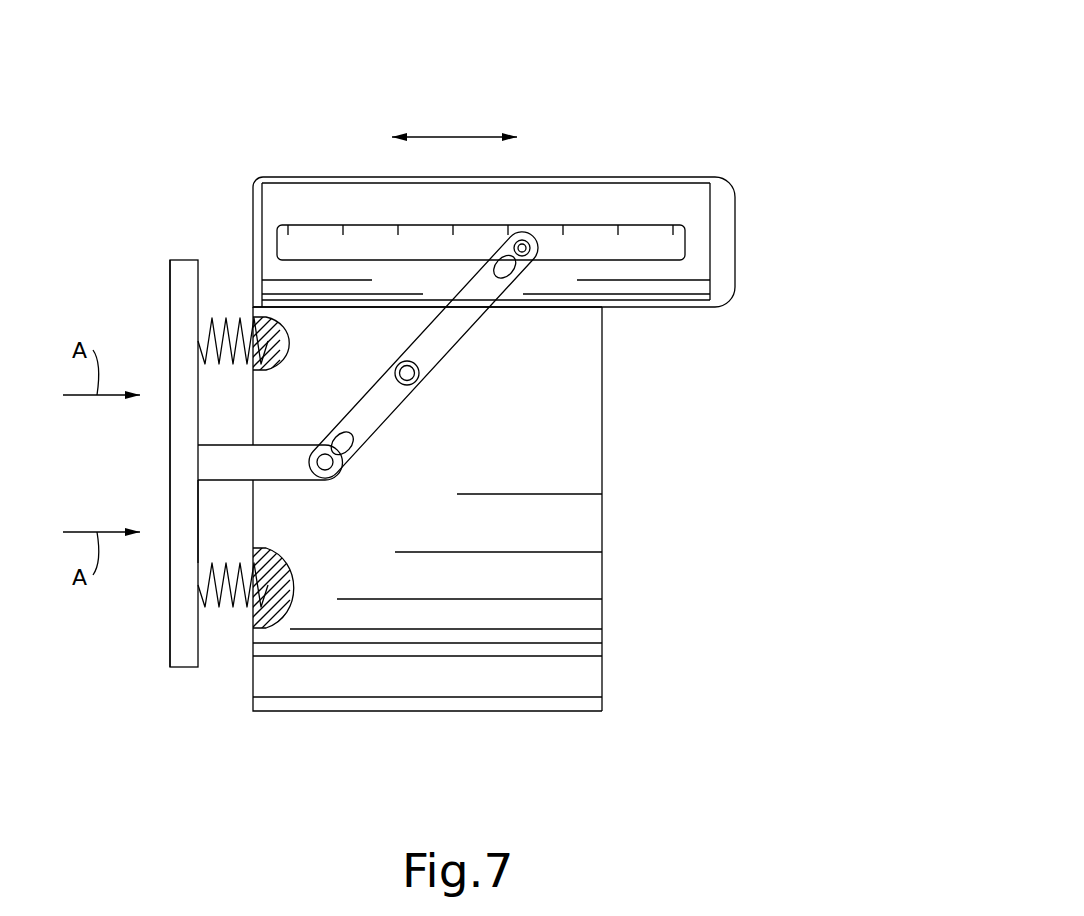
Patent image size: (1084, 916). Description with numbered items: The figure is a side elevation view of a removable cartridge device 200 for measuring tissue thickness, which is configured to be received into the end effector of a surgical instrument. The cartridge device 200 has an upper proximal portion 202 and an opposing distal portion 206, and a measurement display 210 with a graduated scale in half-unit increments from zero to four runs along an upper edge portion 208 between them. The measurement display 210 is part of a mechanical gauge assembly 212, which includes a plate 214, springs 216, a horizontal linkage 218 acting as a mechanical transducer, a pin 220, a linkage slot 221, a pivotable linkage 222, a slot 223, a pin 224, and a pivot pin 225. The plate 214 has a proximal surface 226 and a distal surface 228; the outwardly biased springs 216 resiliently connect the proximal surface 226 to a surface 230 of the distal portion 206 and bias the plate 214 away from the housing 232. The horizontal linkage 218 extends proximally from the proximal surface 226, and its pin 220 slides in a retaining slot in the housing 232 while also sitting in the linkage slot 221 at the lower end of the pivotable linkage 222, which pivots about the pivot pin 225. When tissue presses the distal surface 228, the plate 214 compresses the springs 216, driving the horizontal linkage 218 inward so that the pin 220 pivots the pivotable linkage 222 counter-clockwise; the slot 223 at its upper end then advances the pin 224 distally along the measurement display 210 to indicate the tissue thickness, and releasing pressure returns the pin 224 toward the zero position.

The removable cartridge device 200 is at (660, 80).
The upper proximal portion 202 is at (780, 243).
The distal portion 206 is at (228, 210).
The upper edge portion 208 is at (693, 178).
The measurement display 210 is at (662, 252).
The mechanical gauge assembly 212 is at (572, 472).
The plate 214 is at (146, 625).
The springs 216 is at (215, 318).
The horizontal linkage 218 is at (294, 470).
The pin 220 is at (340, 462).
The linkage slot 221 is at (332, 440).
The pivotable linkage 222 is at (460, 347).
The slot 223 is at (505, 268).
The pin 224 is at (527, 242).
The pivot pin 225 is at (413, 382).
The proximal surface 226 is at (198, 518).
The distal surface 228 is at (170, 502).
The surface 230 is at (262, 372).
The housing 232 is at (584, 578).